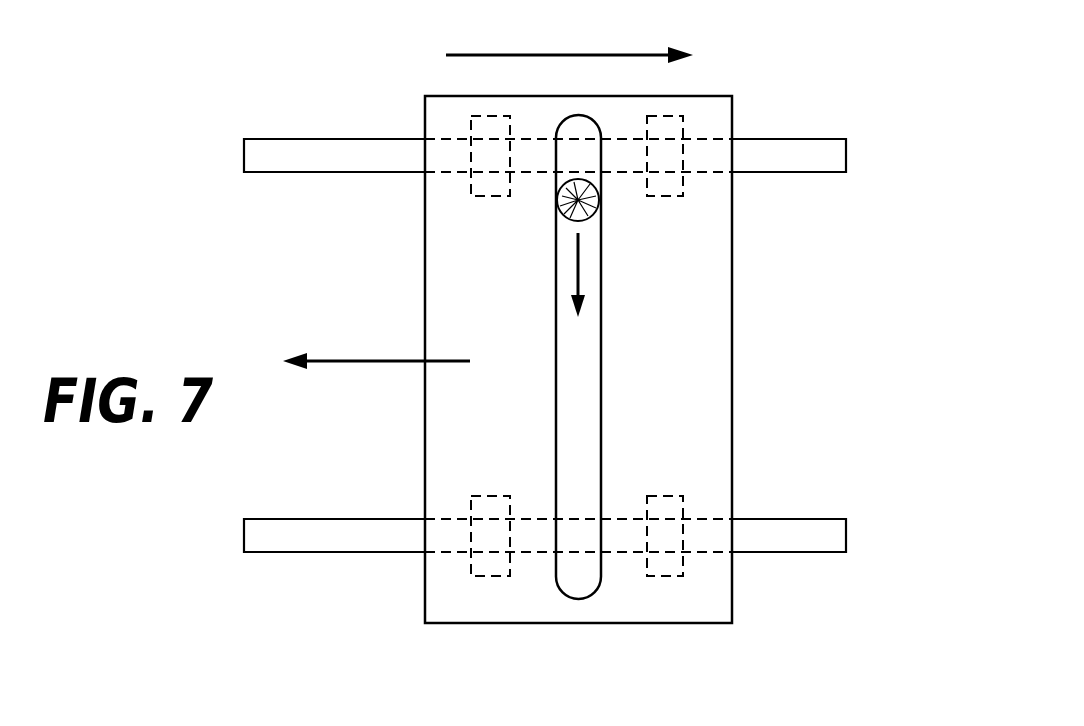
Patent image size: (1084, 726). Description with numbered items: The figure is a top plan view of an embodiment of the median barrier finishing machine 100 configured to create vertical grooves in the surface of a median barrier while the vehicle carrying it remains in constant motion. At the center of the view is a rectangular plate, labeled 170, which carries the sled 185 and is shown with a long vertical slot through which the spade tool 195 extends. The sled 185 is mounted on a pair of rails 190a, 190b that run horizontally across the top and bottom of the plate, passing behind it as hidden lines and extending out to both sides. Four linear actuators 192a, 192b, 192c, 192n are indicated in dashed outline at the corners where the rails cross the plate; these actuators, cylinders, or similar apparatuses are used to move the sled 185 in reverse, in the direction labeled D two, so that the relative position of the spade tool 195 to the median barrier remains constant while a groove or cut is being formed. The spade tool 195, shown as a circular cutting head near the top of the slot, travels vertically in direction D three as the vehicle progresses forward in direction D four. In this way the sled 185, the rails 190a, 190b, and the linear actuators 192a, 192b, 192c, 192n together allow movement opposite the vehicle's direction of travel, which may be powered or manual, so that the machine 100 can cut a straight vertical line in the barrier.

The median barrier finishing machine 100 is at (832, 588).
The mounting plate 170 is at (740, 255).
The sled 185 is at (690, 354).
The rail 190a is at (303, 139).
The rail 190b is at (296, 519).
The linear actuator 192a is at (495, 116).
The linear actuator 192b is at (668, 116).
The linear actuator 192c is at (490, 496).
The linear actuator 192n is at (668, 496).
The spade tool 195 is at (599, 201).